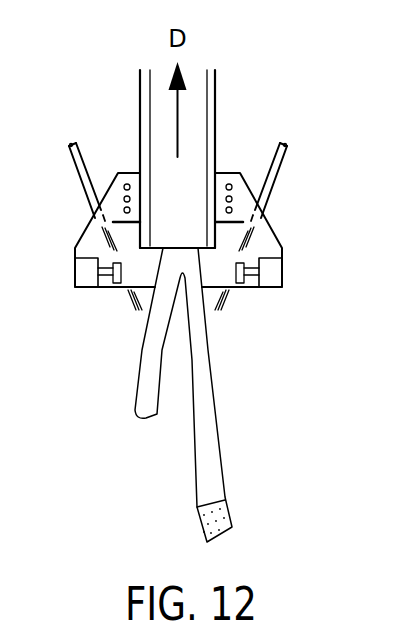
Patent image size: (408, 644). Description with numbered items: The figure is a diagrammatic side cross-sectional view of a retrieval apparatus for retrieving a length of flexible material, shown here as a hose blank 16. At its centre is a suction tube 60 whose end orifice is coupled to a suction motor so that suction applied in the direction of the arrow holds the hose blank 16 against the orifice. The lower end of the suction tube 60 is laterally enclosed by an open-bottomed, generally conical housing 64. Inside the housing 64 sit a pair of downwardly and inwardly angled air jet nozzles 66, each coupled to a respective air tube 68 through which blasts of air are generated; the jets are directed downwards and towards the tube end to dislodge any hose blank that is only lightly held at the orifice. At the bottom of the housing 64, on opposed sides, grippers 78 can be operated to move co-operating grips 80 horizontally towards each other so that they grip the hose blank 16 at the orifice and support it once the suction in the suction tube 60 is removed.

The hose blank 16 is at (215, 413).
The suction tube 60 is at (215, 130).
The housing 64 is at (280, 245).
The air jet nozzles 66 is at (93, 218).
The air tube 68 is at (70, 157).
The grippers 78 is at (75, 273).
The grips 80 is at (120, 290).